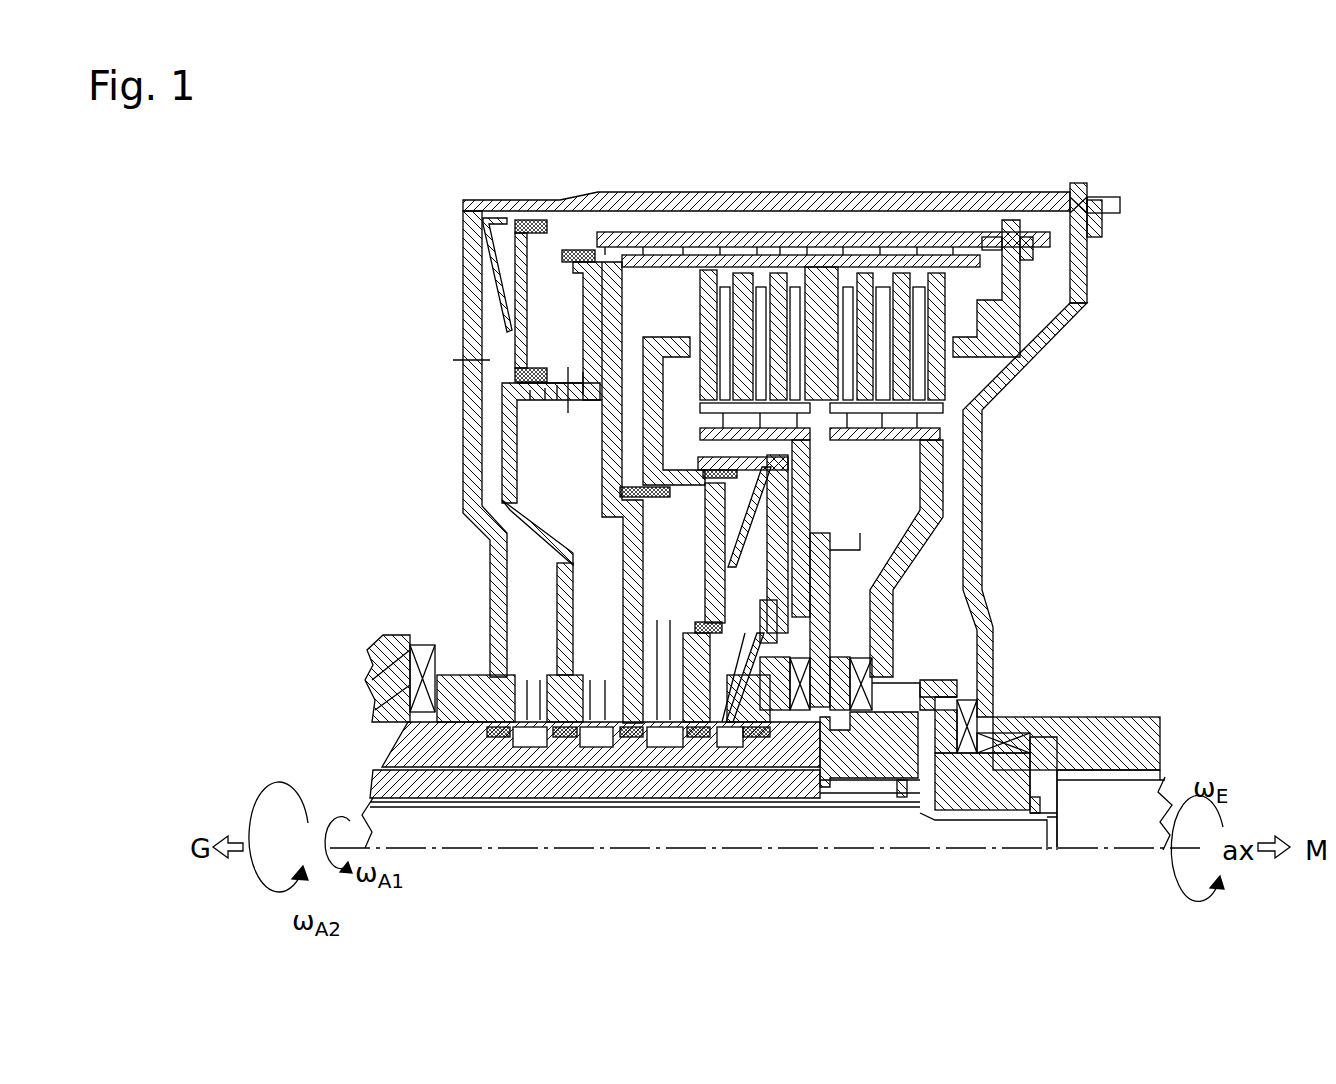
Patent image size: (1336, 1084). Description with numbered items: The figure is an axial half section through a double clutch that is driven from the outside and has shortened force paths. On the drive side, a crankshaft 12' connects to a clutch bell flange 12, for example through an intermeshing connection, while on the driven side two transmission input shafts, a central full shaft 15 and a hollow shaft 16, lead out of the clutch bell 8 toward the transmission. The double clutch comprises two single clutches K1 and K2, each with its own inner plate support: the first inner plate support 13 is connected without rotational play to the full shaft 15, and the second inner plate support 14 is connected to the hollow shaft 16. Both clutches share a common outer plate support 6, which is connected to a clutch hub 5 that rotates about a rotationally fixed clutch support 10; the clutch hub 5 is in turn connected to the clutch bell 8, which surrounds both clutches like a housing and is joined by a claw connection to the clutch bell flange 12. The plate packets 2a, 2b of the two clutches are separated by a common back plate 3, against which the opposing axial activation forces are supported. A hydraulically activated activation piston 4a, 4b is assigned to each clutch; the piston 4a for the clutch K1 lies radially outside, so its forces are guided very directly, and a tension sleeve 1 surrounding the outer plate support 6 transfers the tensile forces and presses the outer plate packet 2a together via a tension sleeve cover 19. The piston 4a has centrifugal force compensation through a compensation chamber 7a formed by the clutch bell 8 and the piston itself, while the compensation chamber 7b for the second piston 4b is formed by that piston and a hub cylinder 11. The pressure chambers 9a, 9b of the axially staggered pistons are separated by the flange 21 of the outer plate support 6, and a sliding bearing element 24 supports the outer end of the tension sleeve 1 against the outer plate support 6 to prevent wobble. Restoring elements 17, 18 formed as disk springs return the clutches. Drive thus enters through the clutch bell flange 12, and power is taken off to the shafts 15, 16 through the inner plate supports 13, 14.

The tension sleeve 1 is at (820, 283).
The outer plate packet 2a is at (990, 378).
The plate packet 2b is at (737, 272).
The common back plate 3 is at (825, 343).
The activation piston 4a is at (485, 207).
The second activation piston 4b is at (653, 443).
The clutch hub 5 is at (483, 698).
The common outer plate support 6 is at (643, 272).
The compensation chamber 7a is at (512, 340).
The compensation chamber 7b is at (747, 600).
The clutch bell 8 is at (810, 240).
The pressure chamber 9a is at (537, 228).
The pressure chamber 9b is at (670, 552).
The clutch support 10 is at (403, 737).
The hub cylinder 11 is at (773, 517).
The clutch bell flange 12 is at (967, 725).
The crankshaft 12' is at (1114, 859).
The first inner plate support 13 is at (930, 477).
The second inner plate support 14 is at (712, 502).
The full shaft 15 is at (992, 835).
The hollow shaft 16 is at (395, 785).
The restoring element 17 is at (512, 288).
The restoring element 18 is at (757, 500).
The tension sleeve cover 19 is at (1032, 293).
The flange 21 is at (597, 415).
The bearing element 24 is at (928, 335).
The first clutch K1 is at (935, 330).
The second clutch K2 is at (742, 292).